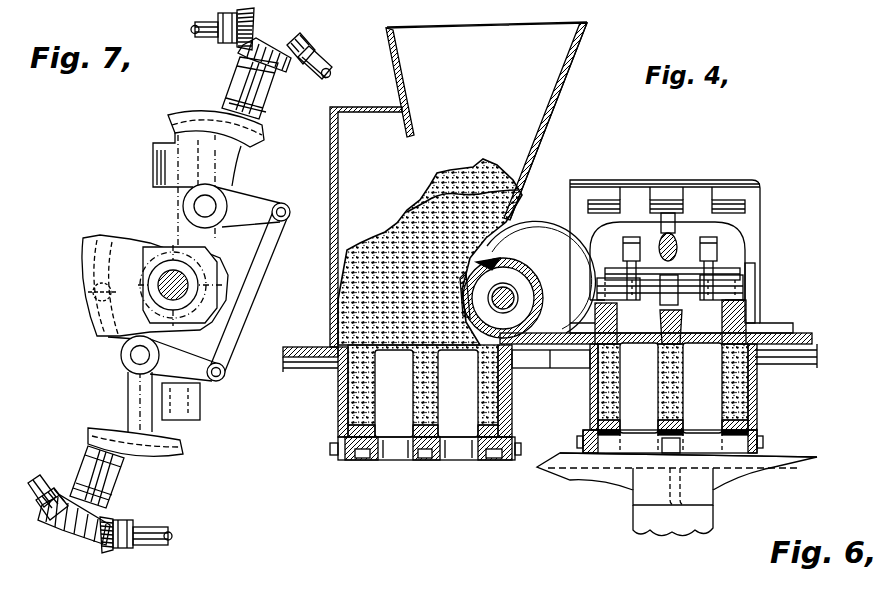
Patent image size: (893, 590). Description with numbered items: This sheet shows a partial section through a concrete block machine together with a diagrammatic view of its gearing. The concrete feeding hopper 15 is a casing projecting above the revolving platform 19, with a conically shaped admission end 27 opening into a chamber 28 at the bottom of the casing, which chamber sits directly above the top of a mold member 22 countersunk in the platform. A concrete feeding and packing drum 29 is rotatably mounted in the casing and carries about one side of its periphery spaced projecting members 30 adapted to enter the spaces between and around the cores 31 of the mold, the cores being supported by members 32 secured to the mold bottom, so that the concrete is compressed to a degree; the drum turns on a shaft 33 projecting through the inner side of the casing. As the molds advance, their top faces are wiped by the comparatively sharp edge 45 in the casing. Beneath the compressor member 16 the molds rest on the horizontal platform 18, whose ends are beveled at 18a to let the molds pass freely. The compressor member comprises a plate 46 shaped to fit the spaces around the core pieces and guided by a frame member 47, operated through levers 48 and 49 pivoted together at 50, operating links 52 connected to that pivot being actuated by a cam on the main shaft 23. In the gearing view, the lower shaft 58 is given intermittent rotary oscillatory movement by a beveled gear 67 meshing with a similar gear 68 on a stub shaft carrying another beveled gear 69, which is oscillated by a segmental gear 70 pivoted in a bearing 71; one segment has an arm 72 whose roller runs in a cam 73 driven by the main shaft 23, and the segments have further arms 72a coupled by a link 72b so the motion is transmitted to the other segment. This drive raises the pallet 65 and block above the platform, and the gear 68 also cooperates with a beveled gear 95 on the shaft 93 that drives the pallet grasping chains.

In FIG. 4, the concrete feeding hopper 15 is at (563, 90).
In FIG. 4, the compressor member 16 is at (732, 312).
In FIG. 4, the horizontal platform 18 is at (740, 477).
In FIG. 4, the beveled end of platform 18a is at (810, 451).
In FIG. 4, the revolving platform 19 is at (298, 347).
In FIG. 4, the mold member 22 is at (340, 400).
In FIG. 7, the main shaft 23 is at (187, 281).
In FIG. 4, the conically shaped admission end 27 is at (553, 48).
In FIG. 4, the chamber 28 is at (340, 237).
In FIG. 4, the concrete feeding and packing drum 29 is at (536, 280).
In FIG. 4, the projecting member 30 is at (501, 250).
In FIG. 4, the core 31 is at (548, 390).
In FIG. 4, the core supporting member 32 is at (367, 457).
In FIG. 4, the drum shaft 33 is at (518, 298).
In FIG. 4, the sharp edge 45 is at (556, 362).
In FIG. 4, the plate 46 is at (740, 324).
In FIG. 4, the frame member 47 is at (756, 272).
In FIG. 4, the lever 48 is at (705, 262).
In FIG. 4, the lever 49 is at (693, 222).
In FIG. 4, the pivot 50 is at (715, 240).
In FIG. 4, the operating link 52 is at (666, 232).
In FIG. 7, the lower shaft 58 is at (193, 29).
In FIG. 4, the pallet 65 is at (348, 432).
In FIG. 7, the beveled gear 67 is at (250, 32).
In FIG. 7, the beveled gear 68 is at (240, 53).
In FIG. 7, the beveled gear 69 is at (258, 127).
In FIG. 7, the segmental gear 70 is at (201, 116).
In FIG. 7, the bearing 71 is at (200, 206).
In FIG. 7, the arm 72 is at (118, 343).
In FIG. 7, the arm 72a is at (222, 405).
In FIG. 7, the link 72b is at (263, 288).
In FIG. 7, the cam 73 is at (96, 239).
In FIG. 7, the shaft 93 is at (323, 66).
In FIG. 7, the beveled gear 95 is at (296, 45).